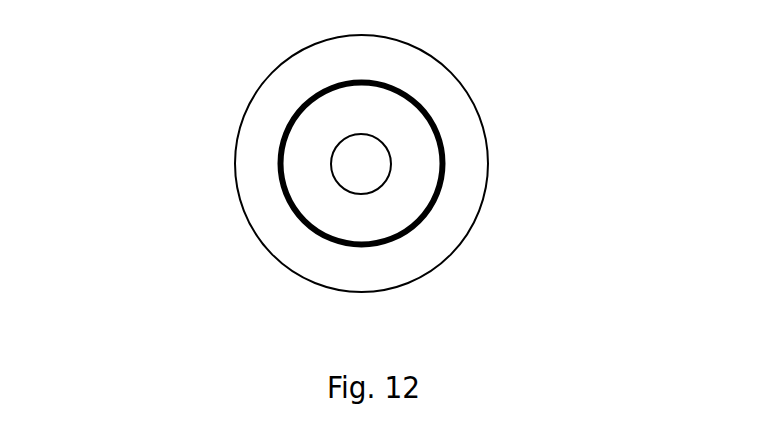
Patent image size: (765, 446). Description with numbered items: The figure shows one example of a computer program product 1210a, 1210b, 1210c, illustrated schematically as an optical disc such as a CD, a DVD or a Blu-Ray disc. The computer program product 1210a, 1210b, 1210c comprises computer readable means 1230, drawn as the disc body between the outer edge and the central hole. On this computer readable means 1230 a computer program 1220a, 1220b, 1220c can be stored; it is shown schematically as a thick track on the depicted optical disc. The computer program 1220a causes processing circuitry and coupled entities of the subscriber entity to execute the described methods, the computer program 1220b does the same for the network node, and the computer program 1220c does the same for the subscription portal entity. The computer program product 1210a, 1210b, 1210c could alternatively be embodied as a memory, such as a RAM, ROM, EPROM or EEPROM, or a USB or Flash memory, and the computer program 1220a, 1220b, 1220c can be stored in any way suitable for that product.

The computer program product 1210a is at (346, 158).
The computer program product 1210b is at (346, 163).
The computer program product 1210c is at (189, 152).
The computer program 1220a is at (450, 164).
The computer program 1220b is at (449, 164).
The computer program 1220c is at (439, 182).
The computer readable means 1230 is at (403, 270).